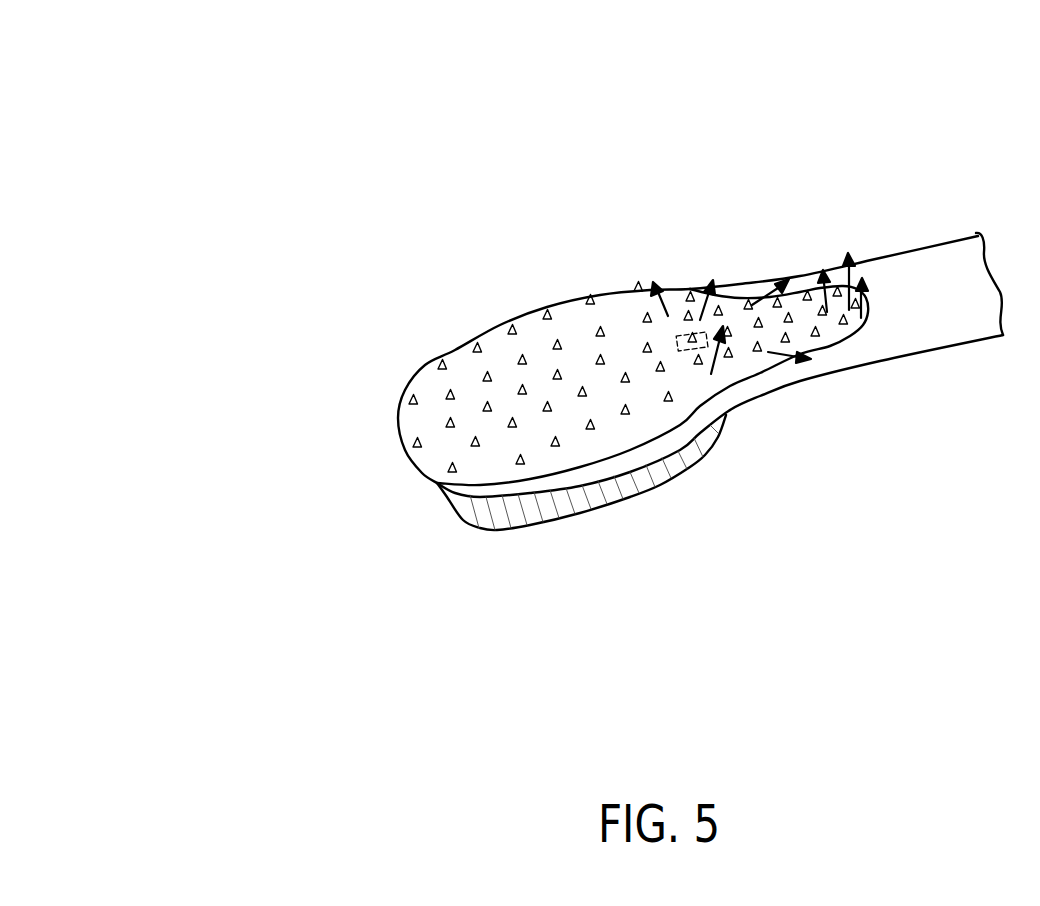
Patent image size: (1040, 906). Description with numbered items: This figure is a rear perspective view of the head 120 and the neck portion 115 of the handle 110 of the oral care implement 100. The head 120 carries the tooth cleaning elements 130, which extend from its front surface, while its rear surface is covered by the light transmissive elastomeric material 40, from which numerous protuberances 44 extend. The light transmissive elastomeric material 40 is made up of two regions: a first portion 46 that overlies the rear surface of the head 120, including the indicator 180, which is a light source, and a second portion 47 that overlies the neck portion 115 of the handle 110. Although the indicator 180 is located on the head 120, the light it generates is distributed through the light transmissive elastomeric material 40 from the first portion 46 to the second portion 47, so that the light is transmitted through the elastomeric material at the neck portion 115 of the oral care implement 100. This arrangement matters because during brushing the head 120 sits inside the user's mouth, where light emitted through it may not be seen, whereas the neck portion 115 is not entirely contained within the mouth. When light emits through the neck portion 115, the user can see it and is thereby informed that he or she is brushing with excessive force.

The oral care implement 100 is at (250, 110).
The handle 110 is at (955, 218).
The neck portion 115 is at (900, 358).
The head 120 is at (476, 308).
The light transmissive elastomeric material 40 is at (487, 460).
The protuberances 44 is at (555, 442).
The first portion 46 is at (577, 337).
The second portion 47 is at (803, 318).
The tooth cleaning elements 130 is at (622, 483).
The indicator 180 is at (692, 350).